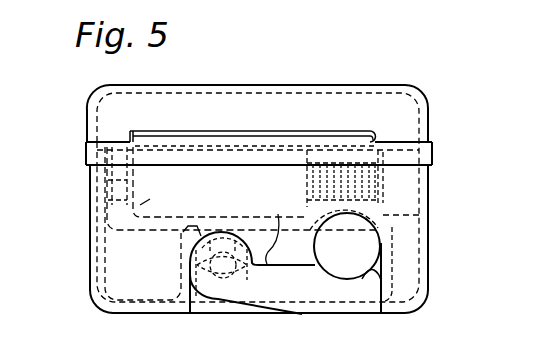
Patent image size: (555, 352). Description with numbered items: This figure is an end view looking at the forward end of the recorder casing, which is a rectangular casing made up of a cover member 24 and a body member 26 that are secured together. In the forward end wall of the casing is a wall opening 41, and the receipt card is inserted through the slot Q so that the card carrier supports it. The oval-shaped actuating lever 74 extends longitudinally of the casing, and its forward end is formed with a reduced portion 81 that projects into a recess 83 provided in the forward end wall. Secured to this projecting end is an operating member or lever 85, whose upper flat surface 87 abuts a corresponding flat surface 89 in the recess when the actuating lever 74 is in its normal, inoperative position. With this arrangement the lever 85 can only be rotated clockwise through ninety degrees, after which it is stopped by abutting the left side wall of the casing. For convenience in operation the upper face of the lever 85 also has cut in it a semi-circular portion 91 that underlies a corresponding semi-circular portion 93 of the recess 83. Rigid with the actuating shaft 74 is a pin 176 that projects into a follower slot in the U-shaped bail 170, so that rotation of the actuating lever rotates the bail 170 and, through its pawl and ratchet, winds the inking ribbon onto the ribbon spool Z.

The cover member 24 is at (377, 103).
The body member 26 is at (89, 205).
The wall opening 41 is at (205, 137).
The slot Q is at (303, 135).
The U-shaped bail 170 is at (130, 237).
The inking ribbon spool Z is at (125, 218).
The semi-circular portion of the recess 93 is at (371, 222).
The recess 83 is at (370, 250).
The semi-circular portion 91 is at (372, 278).
The reduced portion 81 is at (198, 267).
The actuating lever 74 is at (225, 272).
The operating member 85 is at (333, 307).
The upper flat surface 87 is at (293, 266).
The flat surface 89 is at (273, 231).
The pin 176 is at (186, 233).